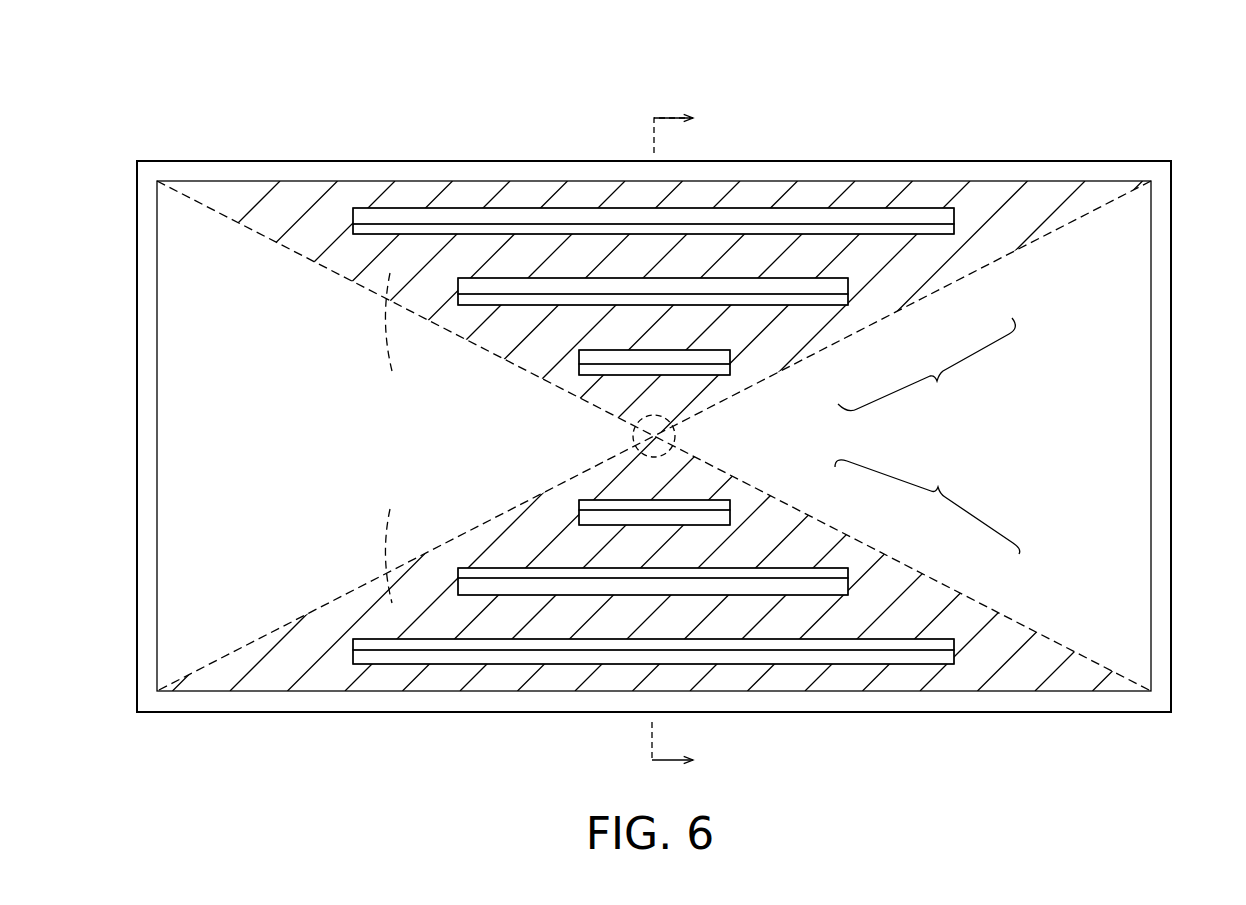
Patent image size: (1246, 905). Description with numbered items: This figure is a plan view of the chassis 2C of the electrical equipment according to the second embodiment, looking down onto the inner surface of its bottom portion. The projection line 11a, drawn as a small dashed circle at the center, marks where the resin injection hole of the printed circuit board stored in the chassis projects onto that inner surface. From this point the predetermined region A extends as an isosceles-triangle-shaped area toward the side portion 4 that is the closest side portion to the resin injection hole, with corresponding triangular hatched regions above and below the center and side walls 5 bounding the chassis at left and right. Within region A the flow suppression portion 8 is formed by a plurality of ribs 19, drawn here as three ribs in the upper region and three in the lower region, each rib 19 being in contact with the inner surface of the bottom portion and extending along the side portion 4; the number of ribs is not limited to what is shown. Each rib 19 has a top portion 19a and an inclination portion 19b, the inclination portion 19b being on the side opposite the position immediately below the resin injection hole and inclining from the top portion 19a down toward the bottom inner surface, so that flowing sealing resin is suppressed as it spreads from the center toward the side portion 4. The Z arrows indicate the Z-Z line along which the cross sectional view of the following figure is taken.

The chassis 2C is at (1018, 161).
The side portion 4 is at (495, 172).
The side wall 5 is at (145, 438).
The flow suppression portion 8 is at (927, 436).
The projection line 11a is at (676, 437).
The rib 19 is at (932, 237).
The top portion 19a is at (954, 228).
The inclination portion 19b is at (954, 213).
The region A is at (390, 438).
The Z-Z line Z is at (682, 439).